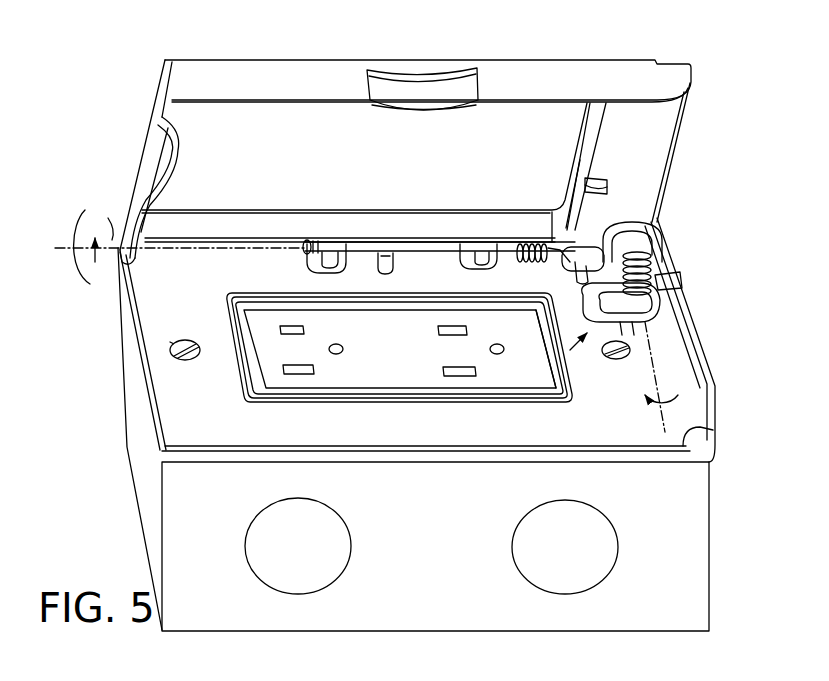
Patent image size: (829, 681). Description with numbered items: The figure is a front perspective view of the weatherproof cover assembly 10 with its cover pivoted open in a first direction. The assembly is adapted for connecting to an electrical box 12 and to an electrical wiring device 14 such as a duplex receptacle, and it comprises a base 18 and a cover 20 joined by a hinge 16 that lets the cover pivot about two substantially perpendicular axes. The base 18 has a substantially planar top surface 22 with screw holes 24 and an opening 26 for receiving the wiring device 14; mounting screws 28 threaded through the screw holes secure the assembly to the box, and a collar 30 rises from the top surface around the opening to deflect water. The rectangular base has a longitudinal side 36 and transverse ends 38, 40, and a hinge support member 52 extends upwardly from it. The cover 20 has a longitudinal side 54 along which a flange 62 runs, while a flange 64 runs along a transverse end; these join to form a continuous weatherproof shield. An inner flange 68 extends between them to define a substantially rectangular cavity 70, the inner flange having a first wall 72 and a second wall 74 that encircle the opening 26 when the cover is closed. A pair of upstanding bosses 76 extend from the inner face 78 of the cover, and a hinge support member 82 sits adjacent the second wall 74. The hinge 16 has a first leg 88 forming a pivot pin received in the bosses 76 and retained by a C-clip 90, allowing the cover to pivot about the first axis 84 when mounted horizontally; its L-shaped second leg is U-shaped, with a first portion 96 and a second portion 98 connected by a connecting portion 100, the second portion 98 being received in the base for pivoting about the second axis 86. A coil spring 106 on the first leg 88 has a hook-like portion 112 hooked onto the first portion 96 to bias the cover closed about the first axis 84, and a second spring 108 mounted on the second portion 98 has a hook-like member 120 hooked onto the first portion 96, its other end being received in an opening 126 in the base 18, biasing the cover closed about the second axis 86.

The weatherproof cover assembly 10 is at (152, 66).
The electrical box 12 is at (668, 555).
The electrical wiring device 14 is at (268, 368).
The hinge 16 is at (548, 358).
The base 18 is at (680, 198).
The cover 20 is at (262, 56).
The top surface 22 is at (165, 415).
The screw holes 24 is at (173, 350).
The opening 26 is at (393, 395).
The mounting screws 28 is at (170, 342).
The collar 30 is at (577, 372).
The longitudinal side 36 is at (152, 446).
The transverse end 38 is at (685, 437).
The transverse end 40 is at (140, 373).
The hinge support member 52 is at (395, 255).
The longitudinal side 54 is at (523, 62).
The flange 62 is at (602, 70).
The flange 64 is at (160, 108).
The inner flange 68 is at (602, 145).
The cavity 70 is at (320, 120).
The first wall 72 is at (300, 220).
The second wall 74 is at (578, 165).
The bosses 76 is at (342, 245).
The inner face 78 is at (648, 122).
The hinge support member 82 is at (612, 185).
The first axis 84 is at (108, 226).
The second axis 86 is at (658, 373).
The first leg 88 is at (428, 245).
The C-clip 90 is at (318, 258).
The first portion 96 is at (555, 262).
The second portion 98 is at (658, 305).
The connecting portion 100 is at (632, 343).
The spring 106 is at (503, 245).
The spring 108 is at (652, 262).
The hook-like portion 112 is at (605, 230).
The hook-like member 120 is at (545, 325).
The opening 126 is at (655, 280).